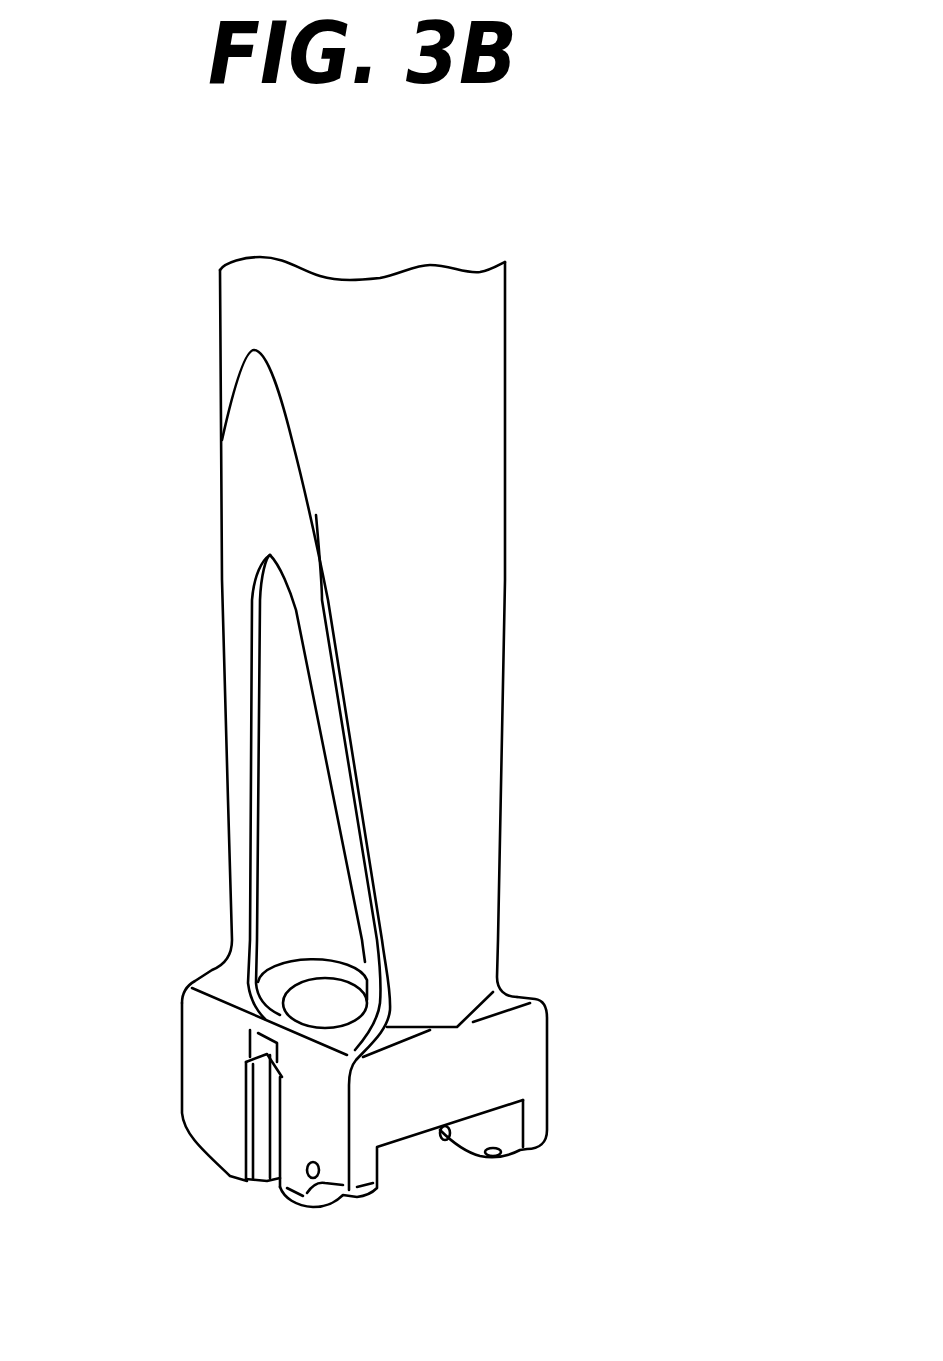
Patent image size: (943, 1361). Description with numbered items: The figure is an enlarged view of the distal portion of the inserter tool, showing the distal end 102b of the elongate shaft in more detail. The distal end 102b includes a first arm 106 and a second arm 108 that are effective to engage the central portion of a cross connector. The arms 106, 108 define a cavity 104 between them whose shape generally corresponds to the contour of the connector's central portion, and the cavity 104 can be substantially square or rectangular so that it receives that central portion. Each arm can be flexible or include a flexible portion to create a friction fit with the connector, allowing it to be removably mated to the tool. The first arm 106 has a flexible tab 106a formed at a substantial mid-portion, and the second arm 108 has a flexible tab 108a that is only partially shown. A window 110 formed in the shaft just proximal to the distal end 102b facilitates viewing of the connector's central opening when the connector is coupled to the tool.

The distal end 102b is at (657, 307).
The cavity 104 is at (440, 1182).
The first arm 106 is at (222, 1081).
The flexible tab 106a is at (267, 1136).
The second arm 108 is at (550, 1127).
The flexible tab 108a is at (442, 1138).
The window 110 is at (298, 772).